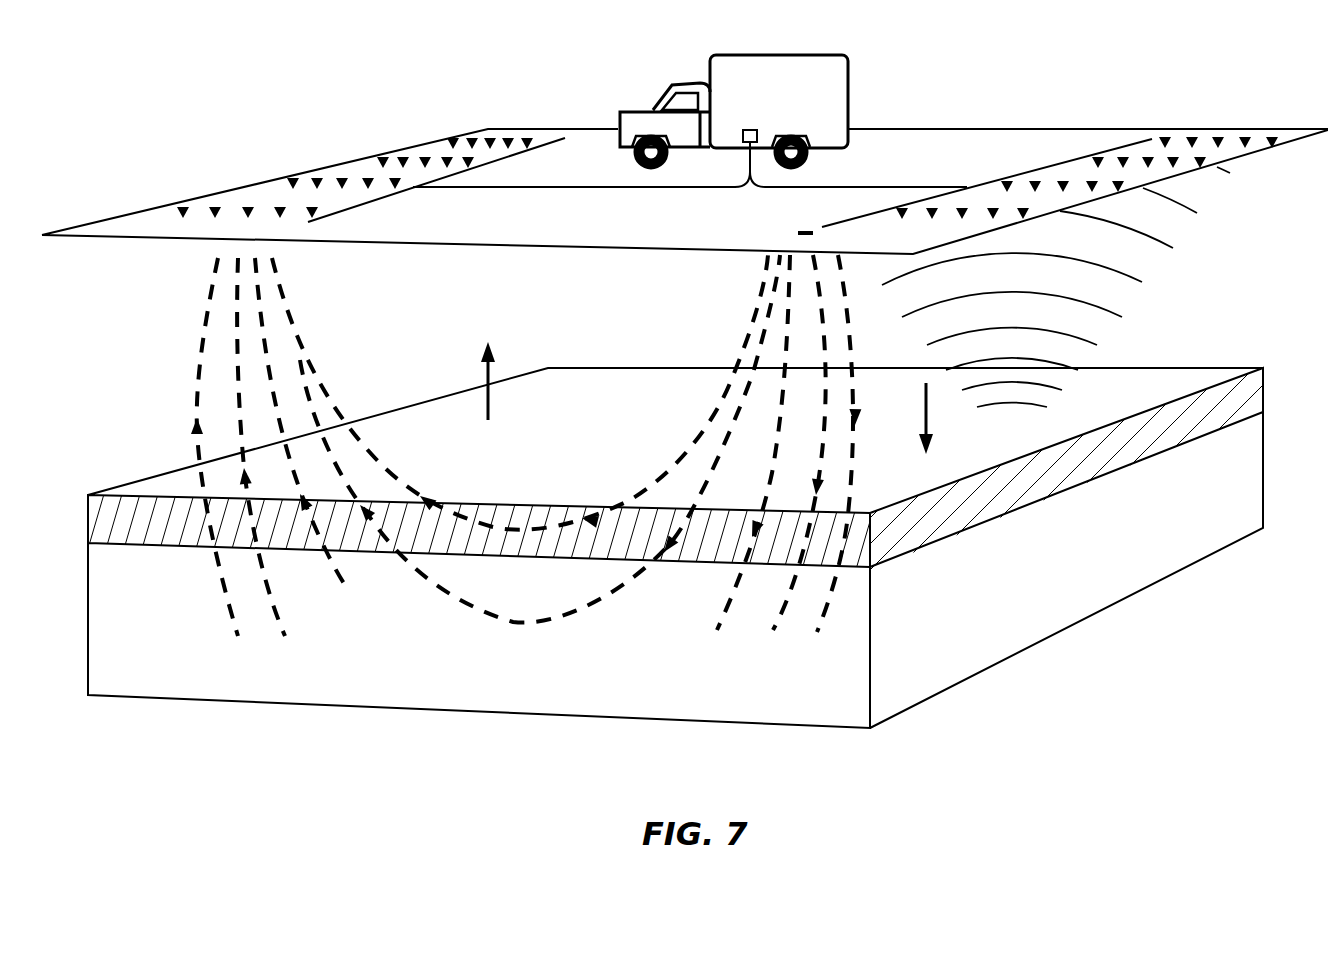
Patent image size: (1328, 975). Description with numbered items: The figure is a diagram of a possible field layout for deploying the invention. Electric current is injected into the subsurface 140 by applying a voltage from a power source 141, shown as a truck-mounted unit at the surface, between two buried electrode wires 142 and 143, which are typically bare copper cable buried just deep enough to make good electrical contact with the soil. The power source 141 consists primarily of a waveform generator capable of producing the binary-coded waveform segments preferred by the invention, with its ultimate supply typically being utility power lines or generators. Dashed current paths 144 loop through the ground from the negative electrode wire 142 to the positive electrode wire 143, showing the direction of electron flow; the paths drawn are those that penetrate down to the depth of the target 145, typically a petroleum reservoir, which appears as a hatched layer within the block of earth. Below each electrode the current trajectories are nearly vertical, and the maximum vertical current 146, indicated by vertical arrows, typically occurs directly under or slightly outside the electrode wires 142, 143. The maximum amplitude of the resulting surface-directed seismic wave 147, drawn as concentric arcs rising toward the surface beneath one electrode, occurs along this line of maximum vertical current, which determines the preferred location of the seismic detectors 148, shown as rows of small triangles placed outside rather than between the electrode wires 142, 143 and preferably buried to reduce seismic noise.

The subsurface 140 is at (407, 330).
The power source 141 is at (848, 65).
The electrode wire 142 is at (1118, 143).
The electrode wire 143 is at (547, 142).
The current paths 144 is at (208, 308).
The target 145 is at (158, 532).
The maximum vertical current 146 is at (492, 352).
The surface-directed seismic wave 147 is at (1176, 248).
The seismic detectors 148 is at (427, 157).